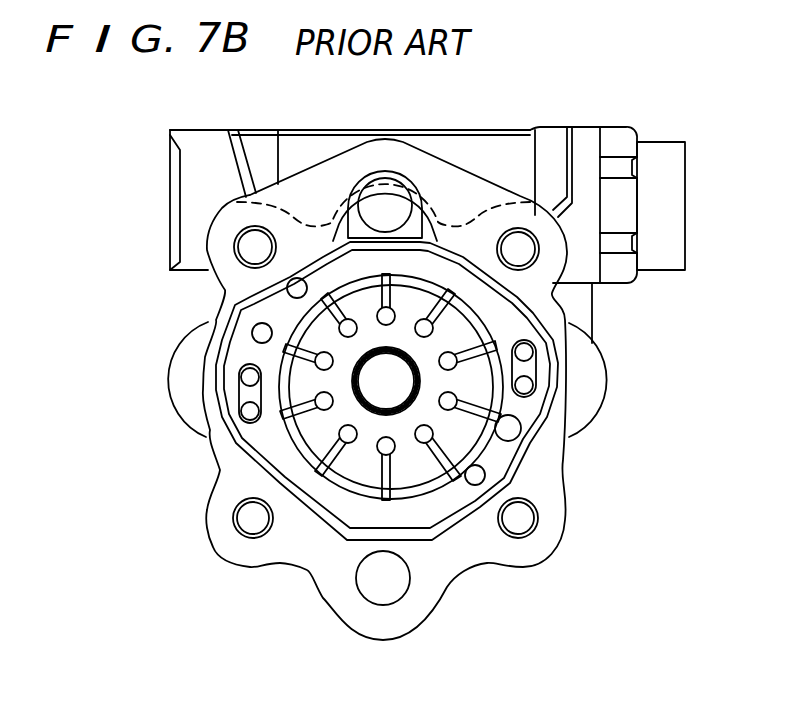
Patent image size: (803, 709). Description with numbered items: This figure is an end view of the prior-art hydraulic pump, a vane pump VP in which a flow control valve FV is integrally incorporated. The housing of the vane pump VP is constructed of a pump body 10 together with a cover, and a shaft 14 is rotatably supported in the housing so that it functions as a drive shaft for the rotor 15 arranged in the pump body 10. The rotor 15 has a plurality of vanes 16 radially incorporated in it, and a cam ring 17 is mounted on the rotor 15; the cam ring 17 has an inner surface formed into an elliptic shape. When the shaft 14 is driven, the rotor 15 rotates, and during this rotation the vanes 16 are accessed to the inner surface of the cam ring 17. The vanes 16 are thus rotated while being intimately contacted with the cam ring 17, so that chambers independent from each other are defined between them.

The pump body 10 is at (206, 376).
The shaft 14 is at (389, 400).
The rotor 15 is at (457, 430).
The vanes 16 is at (423, 442).
The cam ring 17 is at (510, 323).
The vane pump VP is at (562, 550).
The flow control valve FV is at (466, 130).